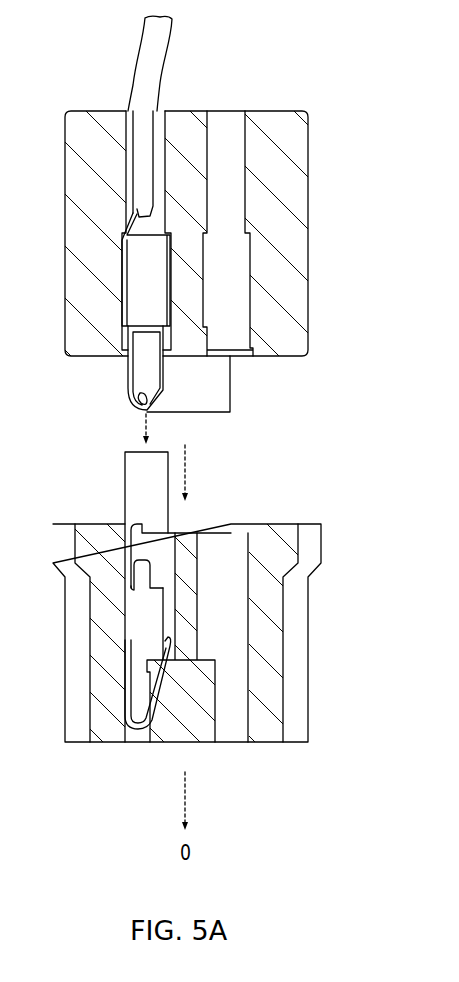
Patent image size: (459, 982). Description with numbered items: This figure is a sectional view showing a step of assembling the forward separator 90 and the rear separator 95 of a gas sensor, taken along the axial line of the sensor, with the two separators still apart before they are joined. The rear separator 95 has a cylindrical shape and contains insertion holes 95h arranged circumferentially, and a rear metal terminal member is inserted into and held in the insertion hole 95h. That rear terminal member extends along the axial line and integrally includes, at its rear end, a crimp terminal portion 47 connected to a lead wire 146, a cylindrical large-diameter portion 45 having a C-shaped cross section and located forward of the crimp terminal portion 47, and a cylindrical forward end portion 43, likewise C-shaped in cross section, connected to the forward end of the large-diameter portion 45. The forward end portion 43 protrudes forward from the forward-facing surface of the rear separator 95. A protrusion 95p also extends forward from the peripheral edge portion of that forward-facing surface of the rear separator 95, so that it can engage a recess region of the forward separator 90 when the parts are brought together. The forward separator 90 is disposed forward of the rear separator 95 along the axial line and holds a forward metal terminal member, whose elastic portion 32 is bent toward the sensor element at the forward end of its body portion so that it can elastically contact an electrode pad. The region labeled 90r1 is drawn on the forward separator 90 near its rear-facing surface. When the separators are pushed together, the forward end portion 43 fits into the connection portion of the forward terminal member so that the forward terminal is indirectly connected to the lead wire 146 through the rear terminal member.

The lead wire 146 is at (143, 52).
The crimp terminal portion 47 is at (140, 160).
The large-diameter portion 45 is at (137, 283).
The forward end portion 43 is at (128, 378).
The rear separator 95 is at (292, 287).
The insertion hole 95h is at (232, 343).
The protrusion 95p is at (213, 398).
The recess of lower housing 90r1 is at (212, 530).
The forward separator 90 is at (296, 596).
The elastic portion 32 is at (150, 697).